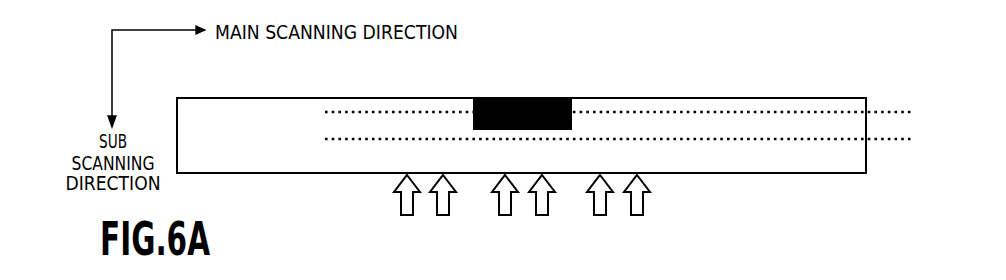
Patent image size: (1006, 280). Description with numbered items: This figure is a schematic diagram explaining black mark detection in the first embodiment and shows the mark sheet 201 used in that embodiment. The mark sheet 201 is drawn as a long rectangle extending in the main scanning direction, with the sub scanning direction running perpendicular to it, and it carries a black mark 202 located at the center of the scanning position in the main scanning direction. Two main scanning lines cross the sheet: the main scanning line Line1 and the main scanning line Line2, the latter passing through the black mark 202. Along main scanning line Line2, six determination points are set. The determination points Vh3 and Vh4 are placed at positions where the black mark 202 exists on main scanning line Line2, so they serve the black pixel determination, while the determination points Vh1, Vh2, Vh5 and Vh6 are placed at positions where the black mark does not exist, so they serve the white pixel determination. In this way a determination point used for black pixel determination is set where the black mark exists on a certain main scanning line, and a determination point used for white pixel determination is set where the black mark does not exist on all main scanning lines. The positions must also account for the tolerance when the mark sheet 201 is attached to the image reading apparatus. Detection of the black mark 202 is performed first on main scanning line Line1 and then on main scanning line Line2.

The mark sheet 201 is at (572, 107).
The black mark 202 is at (541, 108).
The main scanning line Line 1 Line1 is at (646, 139).
The main scanning line Line 2 Line2 is at (646, 112).
The determination point Vh1 is at (405, 210).
The determination point Vh2 is at (442, 210).
The determination point Vh3 is at (504, 210).
The determination point Vh4 is at (540, 210).
The determination point Vh5 is at (601, 210).
The determination point Vh6 is at (638, 210).